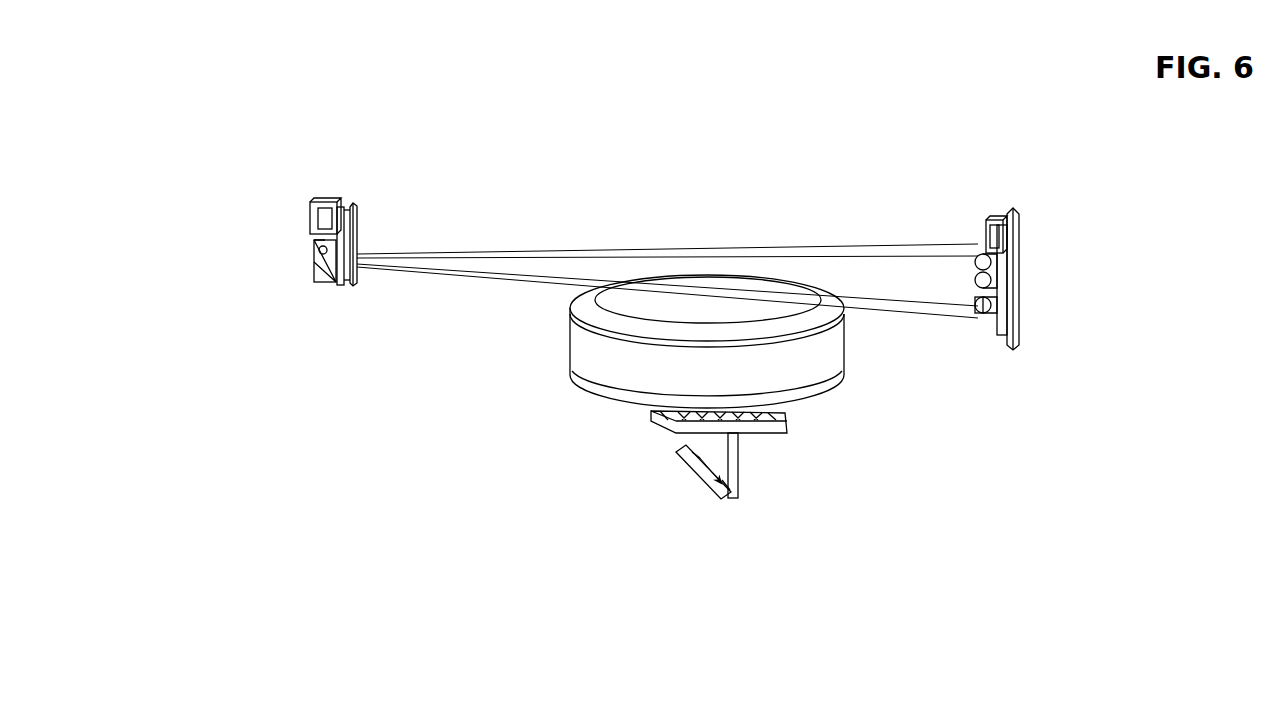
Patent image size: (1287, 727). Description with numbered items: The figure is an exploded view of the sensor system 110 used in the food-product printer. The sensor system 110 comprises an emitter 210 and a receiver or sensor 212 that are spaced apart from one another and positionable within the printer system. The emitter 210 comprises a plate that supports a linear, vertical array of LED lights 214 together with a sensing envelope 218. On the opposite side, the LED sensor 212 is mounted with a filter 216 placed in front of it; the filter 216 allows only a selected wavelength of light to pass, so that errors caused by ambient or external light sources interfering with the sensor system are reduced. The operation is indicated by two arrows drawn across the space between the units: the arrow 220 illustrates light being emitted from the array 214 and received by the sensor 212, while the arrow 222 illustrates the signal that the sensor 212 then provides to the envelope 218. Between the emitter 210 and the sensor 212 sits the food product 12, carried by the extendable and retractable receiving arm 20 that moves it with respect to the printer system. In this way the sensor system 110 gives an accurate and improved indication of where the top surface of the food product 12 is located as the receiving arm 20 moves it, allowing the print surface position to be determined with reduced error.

The sensor system 110 is at (252, 138).
The food product 12 is at (603, 358).
The receiving arm 20 is at (758, 478).
The emitter 210 is at (1048, 231).
The sensor 212 is at (345, 275).
The array of LED lights 214 is at (975, 250).
The filter 216 is at (353, 210).
The sensing envelope 218 is at (975, 322).
The arrow 220 is at (695, 238).
The arrow 222 is at (883, 330).